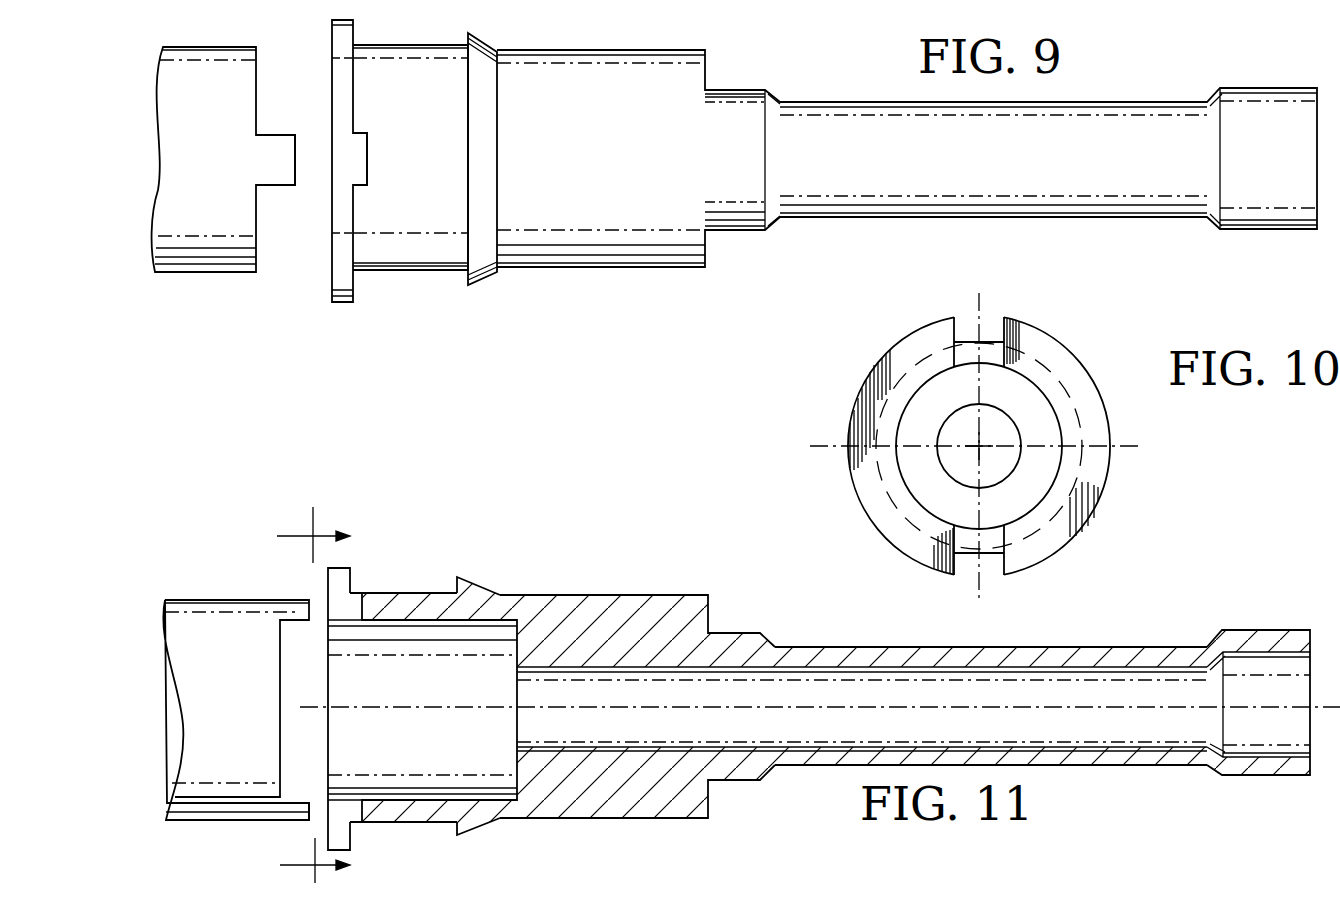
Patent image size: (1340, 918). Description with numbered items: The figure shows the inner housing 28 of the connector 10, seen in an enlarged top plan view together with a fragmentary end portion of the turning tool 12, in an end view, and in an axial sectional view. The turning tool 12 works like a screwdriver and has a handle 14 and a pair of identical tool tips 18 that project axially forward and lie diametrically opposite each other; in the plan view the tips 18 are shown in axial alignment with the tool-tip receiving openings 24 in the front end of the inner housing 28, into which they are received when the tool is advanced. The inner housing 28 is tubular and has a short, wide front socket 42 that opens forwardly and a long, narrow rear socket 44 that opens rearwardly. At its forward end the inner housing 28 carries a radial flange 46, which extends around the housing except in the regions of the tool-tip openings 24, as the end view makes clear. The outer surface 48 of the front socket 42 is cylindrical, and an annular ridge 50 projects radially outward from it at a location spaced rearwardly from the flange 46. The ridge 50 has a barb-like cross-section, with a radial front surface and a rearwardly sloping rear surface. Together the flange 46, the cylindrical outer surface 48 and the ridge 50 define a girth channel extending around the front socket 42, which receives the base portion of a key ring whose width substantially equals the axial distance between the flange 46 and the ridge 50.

In FIG. 11, the connector 10 is at (326, 695).
In FIG. 9, the turning tool 12 is at (207, 221).
In FIG. 11, the turning tool 12 is at (210, 596).
In FIG. 9, the handle 14 is at (211, 78).
In FIG. 11, the handle 14 is at (190, 688).
In FIG. 9, the tool tips 18 is at (275, 150).
In FIG. 11, the tool tips 18 is at (292, 822).
In FIG. 9, the tool-tip receiving openings 24 is at (345, 164).
In FIG. 10, the tool-tip receiving openings 24 is at (992, 352).
In FIG. 9, the inner housing 28 is at (798, 181).
In FIG. 11, the inner housing 28 is at (819, 702).
In FIG. 10, the front socket 42 is at (1023, 398).
In FIG. 11, the front socket 42 is at (495, 652).
In FIG. 9, the rear socket 44 is at (993, 159).
In FIG. 11, the rear socket 44 is at (1115, 690).
In FIG. 9, the radial flange 46 is at (353, 287).
In FIG. 10, the radial flange 46 is at (872, 393).
In FIG. 11, the radial flange 46 is at (352, 585).
In FIG. 9, the outer surface 48 is at (415, 80).
In FIG. 11, the outer surface 48 is at (438, 822).
In FIG. 9, the annular ridge 50 is at (487, 82).
In FIG. 11, the annular ridge 50 is at (462, 580).